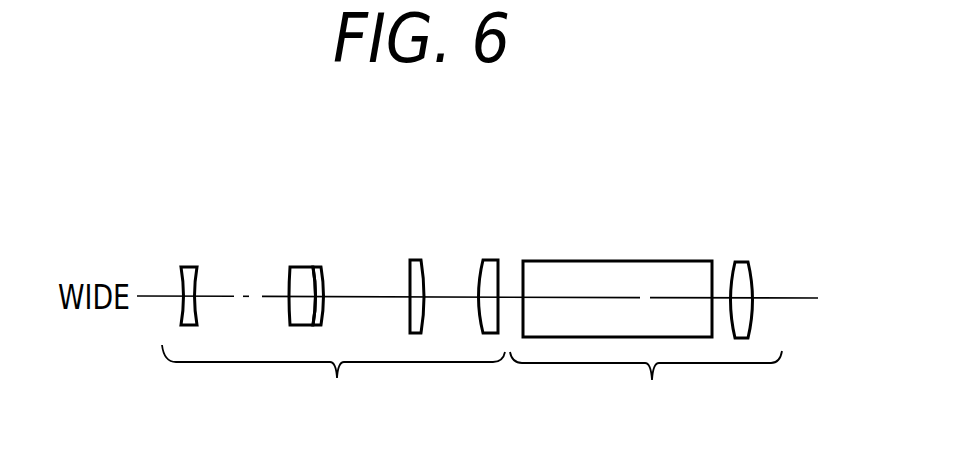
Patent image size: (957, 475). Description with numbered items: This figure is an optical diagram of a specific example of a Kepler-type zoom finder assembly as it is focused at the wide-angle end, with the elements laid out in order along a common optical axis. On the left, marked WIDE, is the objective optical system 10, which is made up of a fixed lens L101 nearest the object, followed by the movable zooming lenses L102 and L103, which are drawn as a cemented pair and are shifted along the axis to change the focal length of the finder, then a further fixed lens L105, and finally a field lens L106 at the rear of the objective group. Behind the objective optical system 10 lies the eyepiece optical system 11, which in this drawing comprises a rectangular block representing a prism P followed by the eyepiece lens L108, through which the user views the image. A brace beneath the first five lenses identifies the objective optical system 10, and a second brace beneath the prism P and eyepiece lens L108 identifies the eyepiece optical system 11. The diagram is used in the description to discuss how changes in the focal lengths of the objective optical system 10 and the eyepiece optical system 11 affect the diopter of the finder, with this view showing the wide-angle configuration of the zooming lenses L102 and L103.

The fixed lens L101 is at (192, 272).
The movable zooming lens L102 is at (298, 272).
The movable zooming lens L103 is at (310, 272).
The fixed lens L105 is at (418, 268).
The field lens L106 is at (490, 268).
The prism P is at (645, 261).
The eyepiece lens L108 is at (741, 262).
The objective optical system 10 is at (333, 383).
The eyepiece optical system 11 is at (646, 387).